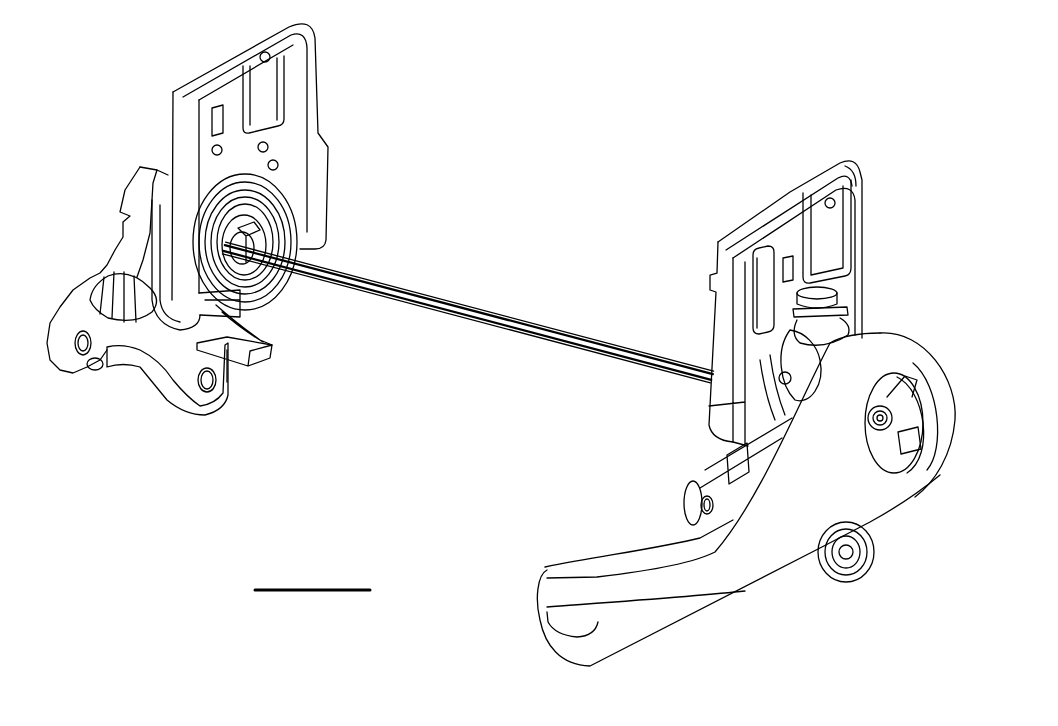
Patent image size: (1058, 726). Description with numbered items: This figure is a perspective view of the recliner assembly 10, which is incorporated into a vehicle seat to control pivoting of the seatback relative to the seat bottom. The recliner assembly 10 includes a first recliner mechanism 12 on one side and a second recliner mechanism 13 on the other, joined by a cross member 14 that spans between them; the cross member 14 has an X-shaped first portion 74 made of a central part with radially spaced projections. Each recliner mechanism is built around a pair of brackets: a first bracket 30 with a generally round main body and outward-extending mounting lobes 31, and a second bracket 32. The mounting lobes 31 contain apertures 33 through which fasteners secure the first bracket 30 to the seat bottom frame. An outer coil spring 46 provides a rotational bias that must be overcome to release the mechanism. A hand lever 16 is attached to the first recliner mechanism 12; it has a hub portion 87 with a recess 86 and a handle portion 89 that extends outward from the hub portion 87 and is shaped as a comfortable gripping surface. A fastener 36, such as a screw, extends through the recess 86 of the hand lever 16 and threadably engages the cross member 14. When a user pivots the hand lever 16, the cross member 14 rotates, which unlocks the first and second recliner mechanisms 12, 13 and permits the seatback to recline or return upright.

The recliner assembly 10 is at (628, 122).
The first recliner mechanism 12 is at (710, 440).
The second recliner mechanism 13 is at (139, 160).
The cross member 14 is at (459, 270).
The hand lever 16 is at (773, 579).
The first bracket 30 is at (147, 371).
The mounting lobes 31 is at (688, 495).
The second bracket 32 is at (233, 62).
The apertures 33 is at (88, 346).
The fastener 36 is at (904, 395).
The outer coil spring 46 is at (858, 342).
The first portion 74 is at (508, 302).
The recess 86 is at (883, 455).
The hub portion 87 is at (888, 350).
The handle portion 89 is at (547, 630).